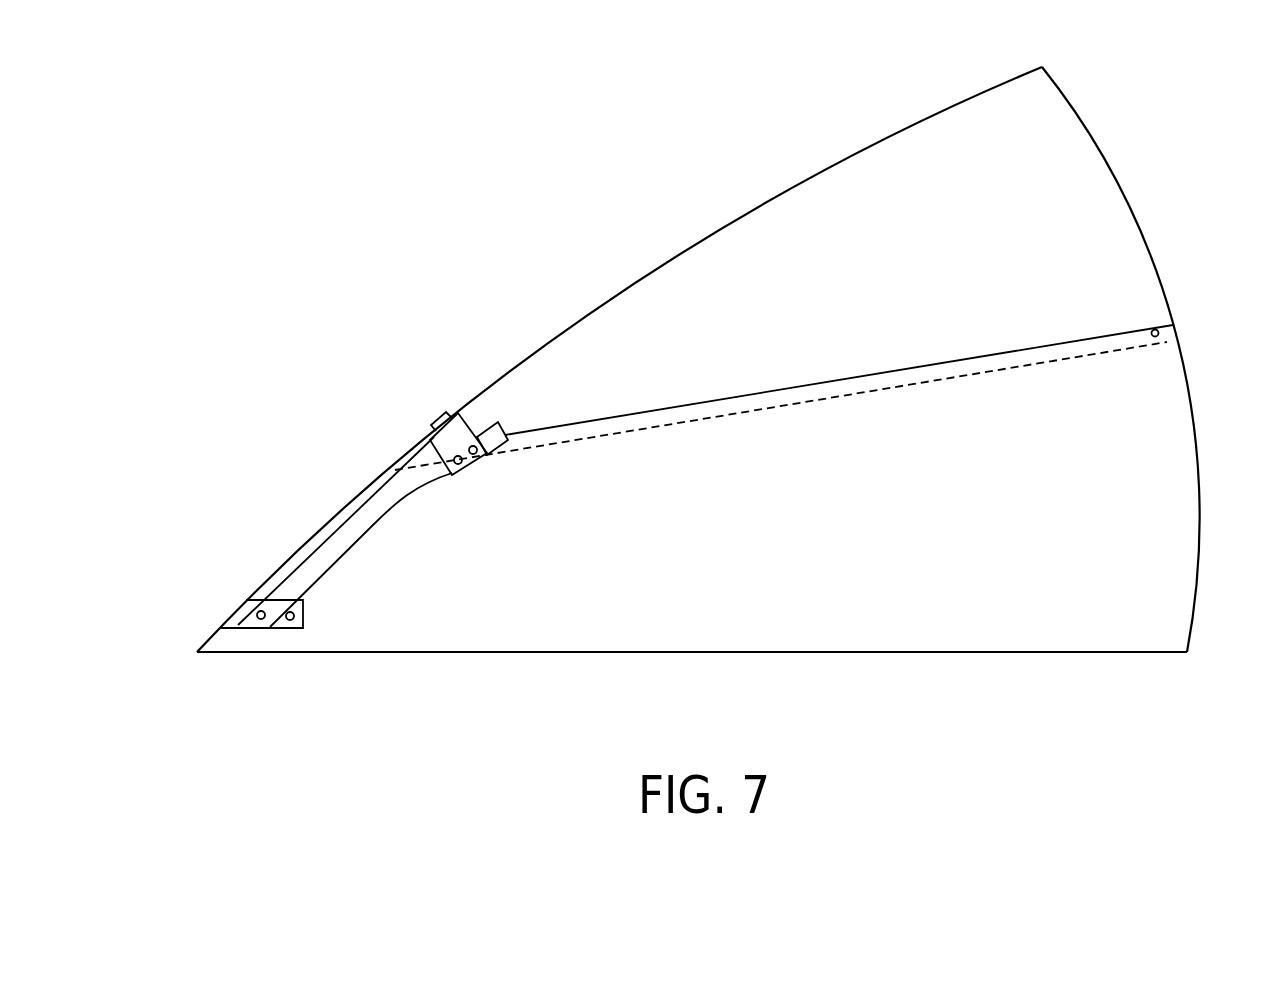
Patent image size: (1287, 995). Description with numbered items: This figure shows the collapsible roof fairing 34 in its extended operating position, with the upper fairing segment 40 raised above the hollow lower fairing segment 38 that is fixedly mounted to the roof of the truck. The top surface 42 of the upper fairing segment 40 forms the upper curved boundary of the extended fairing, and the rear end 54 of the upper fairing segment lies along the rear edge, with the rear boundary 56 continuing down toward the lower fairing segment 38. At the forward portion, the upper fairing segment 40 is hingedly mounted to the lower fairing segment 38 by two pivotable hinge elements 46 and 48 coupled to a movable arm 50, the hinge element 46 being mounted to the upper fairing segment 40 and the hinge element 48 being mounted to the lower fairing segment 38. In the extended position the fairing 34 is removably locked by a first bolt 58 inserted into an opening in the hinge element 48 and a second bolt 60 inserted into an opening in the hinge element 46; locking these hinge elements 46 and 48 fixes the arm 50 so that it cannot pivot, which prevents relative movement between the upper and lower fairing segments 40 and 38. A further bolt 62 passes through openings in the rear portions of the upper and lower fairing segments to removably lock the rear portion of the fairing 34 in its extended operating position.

The fairing 34 is at (738, 352).
The lower fairing segment 38 is at (865, 557).
The upper fairing segment 40 is at (887, 263).
The top surface of the upper fairing segment 42 is at (815, 175).
The hinge element 46 is at (463, 466).
The hinge element 48 is at (303, 623).
The movable arm 50 is at (337, 558).
The rear end of the upper fairing segment 54 is at (1080, 115).
The outer edge lower portion 56 is at (1201, 512).
The first bolt 58 is at (261, 609).
The second bolt 60 is at (508, 446).
The bolt 62 is at (1178, 346).